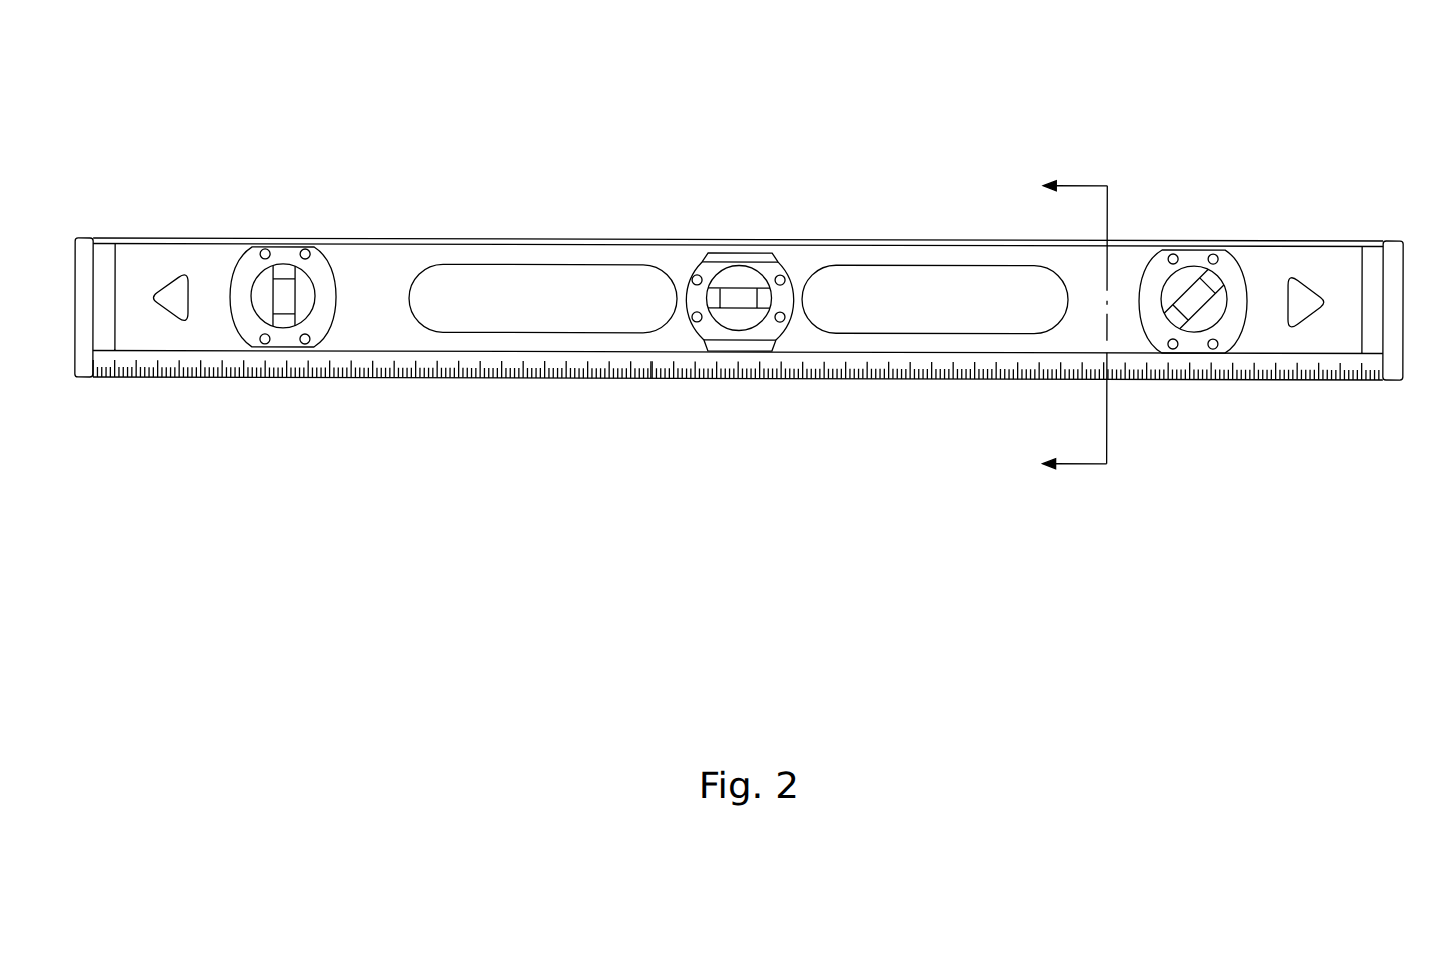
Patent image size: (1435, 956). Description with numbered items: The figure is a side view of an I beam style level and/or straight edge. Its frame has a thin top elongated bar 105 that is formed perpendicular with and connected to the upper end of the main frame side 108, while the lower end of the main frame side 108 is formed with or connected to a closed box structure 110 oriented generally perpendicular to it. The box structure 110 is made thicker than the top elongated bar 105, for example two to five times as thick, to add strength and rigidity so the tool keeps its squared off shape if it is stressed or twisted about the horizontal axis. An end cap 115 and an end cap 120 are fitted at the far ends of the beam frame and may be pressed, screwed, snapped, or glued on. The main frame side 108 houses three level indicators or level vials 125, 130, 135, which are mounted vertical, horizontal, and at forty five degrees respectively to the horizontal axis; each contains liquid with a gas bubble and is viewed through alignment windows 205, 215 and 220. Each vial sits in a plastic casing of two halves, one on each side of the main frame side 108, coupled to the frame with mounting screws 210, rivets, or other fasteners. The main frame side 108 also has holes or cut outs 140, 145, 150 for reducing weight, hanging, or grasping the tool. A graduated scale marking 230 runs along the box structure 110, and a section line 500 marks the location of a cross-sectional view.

The top elongated bar 105 is at (487, 238).
The main frame side 108 is at (370, 302).
The box structure 110 is at (364, 362).
The end cap 115 is at (82, 378).
The end cap 120 is at (1394, 380).
The level indicator or level vial 125 is at (317, 254).
The level indicator or level vial 130 is at (774, 255).
The level indicator or level vial 135 is at (1218, 259).
The hole or cut out 140 is at (165, 270).
The hole or cut out 145 is at (613, 265).
The hole or cut out 150 is at (883, 265).
The alignment window 205 is at (334, 290).
The mounting screw 210 is at (318, 290).
The alignment window 215 is at (753, 287).
The alignment window 220 is at (1187, 293).
The scale marking 230 is at (650, 368).
The section line 500 is at (1050, 325).